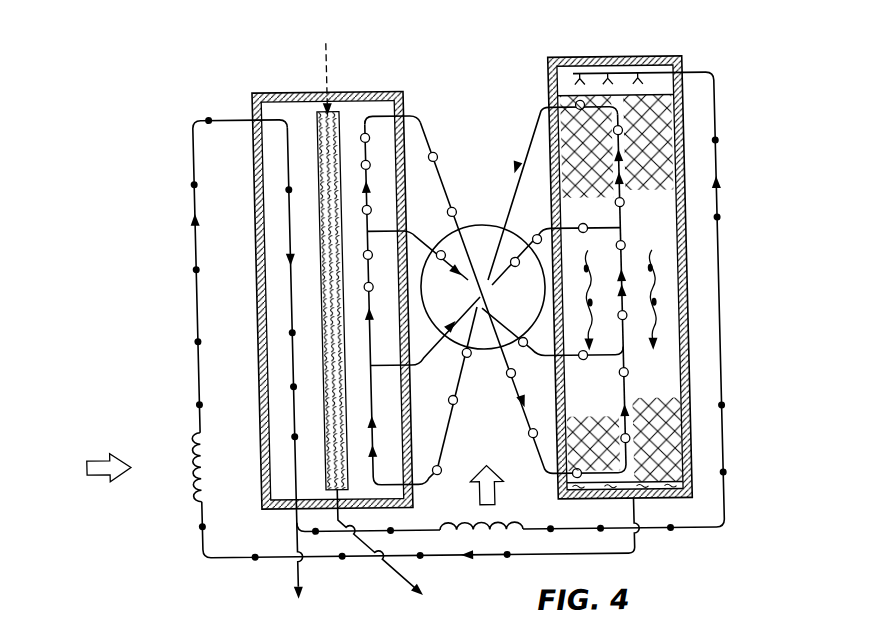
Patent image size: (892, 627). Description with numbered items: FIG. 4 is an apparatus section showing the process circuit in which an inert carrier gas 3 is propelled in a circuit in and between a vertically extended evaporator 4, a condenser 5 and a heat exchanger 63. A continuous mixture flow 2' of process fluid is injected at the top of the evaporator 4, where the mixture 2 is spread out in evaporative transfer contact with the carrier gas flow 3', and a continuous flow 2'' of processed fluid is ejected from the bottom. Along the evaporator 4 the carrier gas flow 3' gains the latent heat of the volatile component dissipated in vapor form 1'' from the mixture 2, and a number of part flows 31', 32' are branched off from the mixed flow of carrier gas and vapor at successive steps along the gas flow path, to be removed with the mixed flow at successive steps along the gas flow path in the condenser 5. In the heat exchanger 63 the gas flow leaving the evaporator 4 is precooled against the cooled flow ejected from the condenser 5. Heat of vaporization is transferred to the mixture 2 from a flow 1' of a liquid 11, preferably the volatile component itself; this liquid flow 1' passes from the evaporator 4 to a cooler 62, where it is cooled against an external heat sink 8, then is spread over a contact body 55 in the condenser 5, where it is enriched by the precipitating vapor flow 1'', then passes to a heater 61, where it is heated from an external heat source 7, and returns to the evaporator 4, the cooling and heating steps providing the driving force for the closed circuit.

The evaporator 4 is at (347, 95).
The mixture 2 is at (319, 301).
The continuous mixture flow 2' is at (341, 79).
The continuous flow of processed fluid 2'' is at (406, 544).
The inert carrier gas 3 is at (398, 300).
The carrier gas flow 3' is at (500, 291).
The part flow 32' is at (417, 240).
The part flow 31' is at (425, 344).
The heat exchanger 63 is at (490, 350).
The liquid flow 1' is at (456, 293).
The vapor form of volatile component 1'' is at (313, 366).
The liquid 11 is at (197, 358).
The heater 61 is at (204, 455).
The cooler 62 is at (506, 520).
The external heat source 7 is at (105, 456).
The external heat sink 8 is at (492, 476).
The condenser 5 is at (650, 100).
The contact body 55 is at (664, 221).